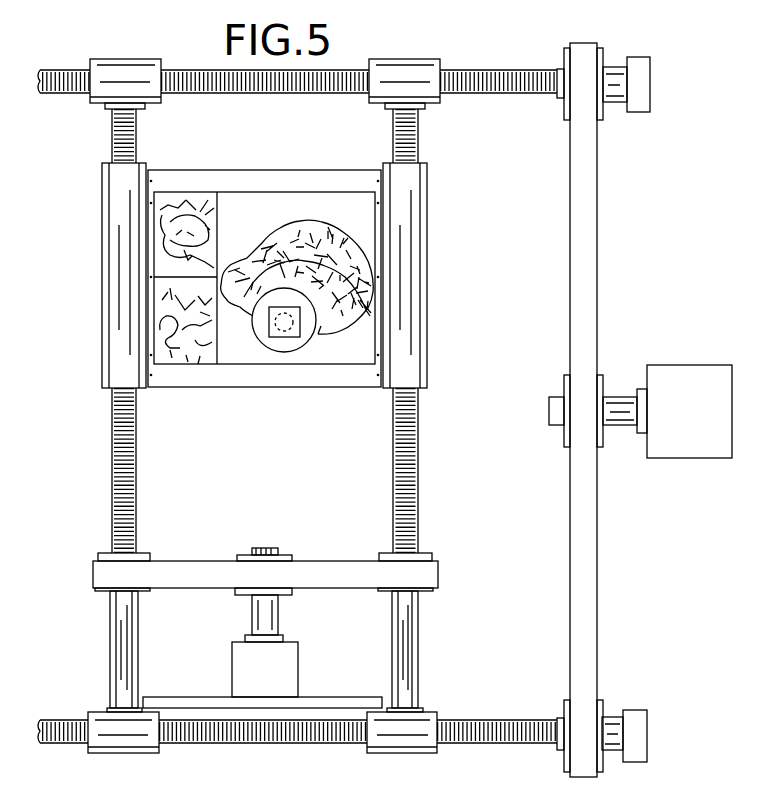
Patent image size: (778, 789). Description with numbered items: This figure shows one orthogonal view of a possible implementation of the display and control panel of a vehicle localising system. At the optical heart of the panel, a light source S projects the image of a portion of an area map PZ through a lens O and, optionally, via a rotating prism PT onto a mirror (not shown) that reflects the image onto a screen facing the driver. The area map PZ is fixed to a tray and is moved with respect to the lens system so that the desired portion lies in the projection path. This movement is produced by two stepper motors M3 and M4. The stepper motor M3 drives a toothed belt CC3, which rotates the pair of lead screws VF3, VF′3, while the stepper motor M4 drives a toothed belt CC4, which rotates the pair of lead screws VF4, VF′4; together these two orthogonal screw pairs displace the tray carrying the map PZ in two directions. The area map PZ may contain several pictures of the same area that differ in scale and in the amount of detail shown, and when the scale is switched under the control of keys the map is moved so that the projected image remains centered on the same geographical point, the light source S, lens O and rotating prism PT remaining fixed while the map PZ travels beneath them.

The lead screw VF′4 is at (460, 82).
The toothed belt CC4 is at (600, 228).
The stepper motor M4 is at (700, 383).
The lead screw VF3 is at (115, 483).
The lead screw VF′3 is at (418, 498).
The toothed belt CC3 is at (345, 570).
The stepper motor M3 is at (288, 678).
The lead screw VF4 is at (518, 723).
The light source S is at (278, 333).
The rotating prism PT is at (288, 337).
The lens O is at (297, 340).
The area map PZ is at (350, 343).